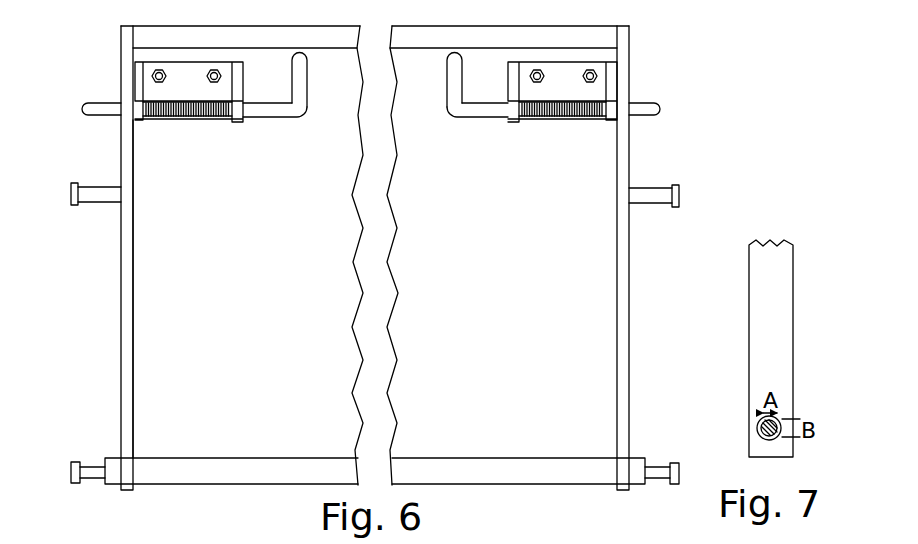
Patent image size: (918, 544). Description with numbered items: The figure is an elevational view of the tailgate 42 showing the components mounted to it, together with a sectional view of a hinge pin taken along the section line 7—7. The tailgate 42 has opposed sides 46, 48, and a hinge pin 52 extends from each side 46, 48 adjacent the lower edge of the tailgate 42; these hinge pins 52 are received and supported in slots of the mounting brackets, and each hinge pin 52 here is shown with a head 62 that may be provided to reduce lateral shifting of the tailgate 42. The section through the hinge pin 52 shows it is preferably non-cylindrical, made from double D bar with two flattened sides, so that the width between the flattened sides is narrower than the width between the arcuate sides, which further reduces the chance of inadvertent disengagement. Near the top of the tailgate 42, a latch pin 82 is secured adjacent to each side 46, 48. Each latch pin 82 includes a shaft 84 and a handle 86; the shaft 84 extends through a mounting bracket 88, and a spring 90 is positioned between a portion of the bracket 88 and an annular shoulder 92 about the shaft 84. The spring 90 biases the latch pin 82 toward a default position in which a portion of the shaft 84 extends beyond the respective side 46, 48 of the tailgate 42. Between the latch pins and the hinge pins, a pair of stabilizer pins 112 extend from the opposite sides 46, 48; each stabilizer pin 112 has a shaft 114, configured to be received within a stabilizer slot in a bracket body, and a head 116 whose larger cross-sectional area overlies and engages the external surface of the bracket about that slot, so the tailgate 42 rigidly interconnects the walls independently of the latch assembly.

In FIG. 6, the tailgate 42 is at (147, 322).
In FIG. 7, the tailgate 42 is at (758, 322).
In FIG. 6, the side 46 is at (140, 380).
In FIG. 6, the side 48 is at (610, 290).
In FIG. 6, the hinge pin 52 is at (375, 475).
In FIG. 7, the hinge pin 52 is at (760, 421).
In FIG. 6, the head 62 is at (73, 461).
In FIG. 6, the latch pin 82 is at (294, 122).
In FIG. 6, the shaft 84 is at (375, 119).
In FIG. 6, the handle 86 is at (302, 91).
In FIG. 6, the mounting bracket 88 is at (242, 87).
In FIG. 6, the spring 90 is at (180, 117).
In FIG. 6, the annular shoulder 92 is at (146, 118).
In FIG. 6, the stabilizer pin 112 is at (395, 203).
In FIG. 6, the shaft 114 is at (106, 196).
In FIG. 6, the head 116 is at (74, 201).
In FIG. 6, the section line 7— 7 is at (90, 435).